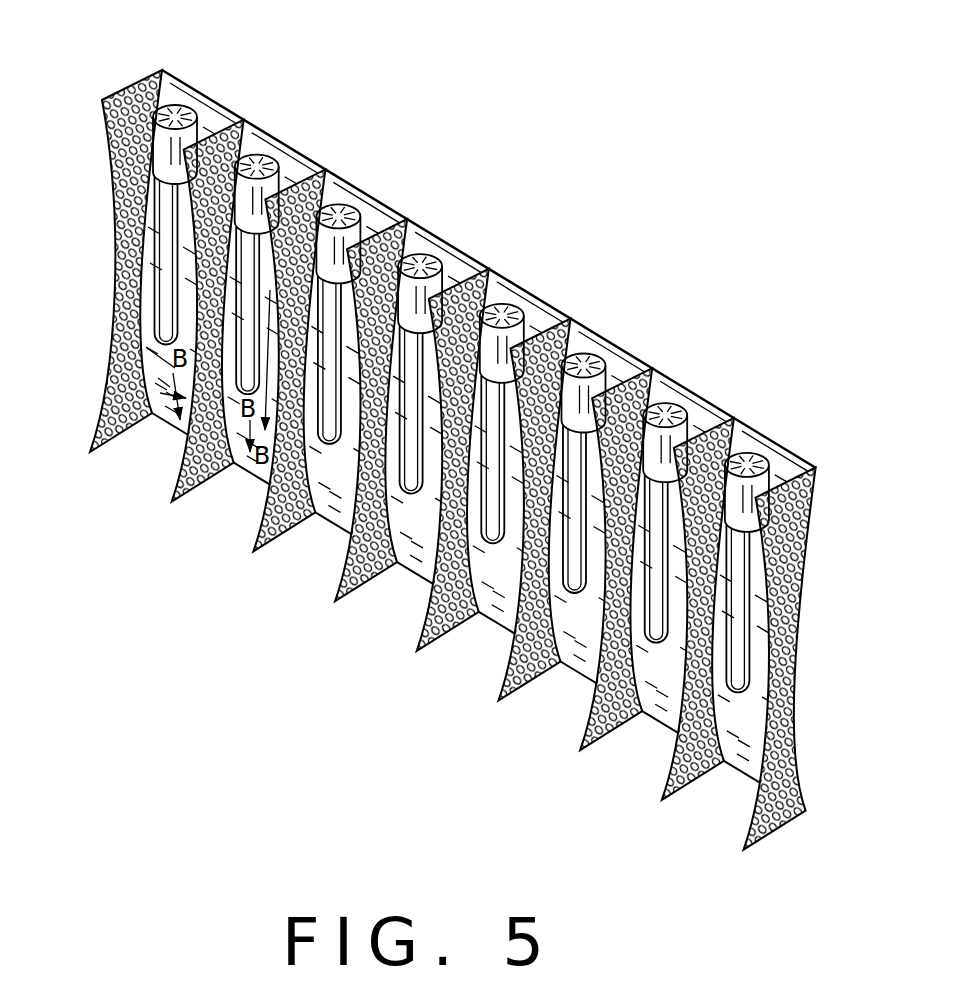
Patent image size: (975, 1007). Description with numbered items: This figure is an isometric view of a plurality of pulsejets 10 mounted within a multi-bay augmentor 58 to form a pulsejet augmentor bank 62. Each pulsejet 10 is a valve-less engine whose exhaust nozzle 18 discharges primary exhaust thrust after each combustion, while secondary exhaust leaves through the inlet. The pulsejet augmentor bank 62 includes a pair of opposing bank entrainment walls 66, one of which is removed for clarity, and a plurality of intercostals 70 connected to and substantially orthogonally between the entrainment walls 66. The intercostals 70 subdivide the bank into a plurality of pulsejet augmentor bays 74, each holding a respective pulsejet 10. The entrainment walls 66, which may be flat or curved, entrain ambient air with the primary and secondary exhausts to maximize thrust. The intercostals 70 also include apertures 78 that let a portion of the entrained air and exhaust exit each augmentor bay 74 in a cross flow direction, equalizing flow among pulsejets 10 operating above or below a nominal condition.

The pulsejet 10 is at (153, 292).
The exhaust nozzle 18 is at (348, 532).
The multi-bay augmentor 58 is at (162, 70).
The pulsejet augmentor bank 62 is at (657, 279).
The bank entrainment wall 66 is at (371, 192).
The intercostal 70 is at (138, 88).
The pulsejet augmentor bay 74 is at (149, 459).
The aperture 78 is at (190, 561).